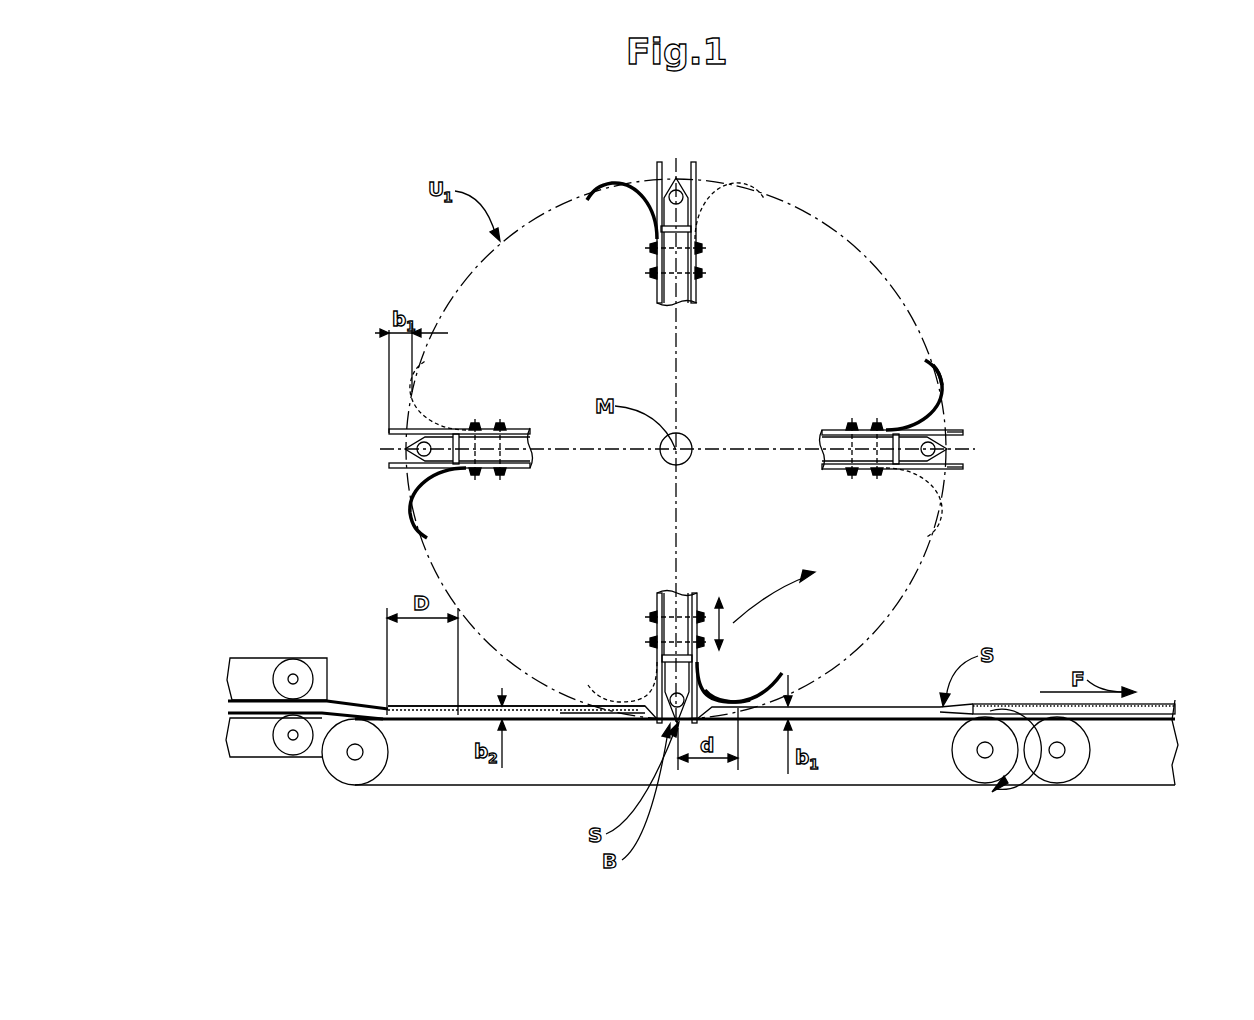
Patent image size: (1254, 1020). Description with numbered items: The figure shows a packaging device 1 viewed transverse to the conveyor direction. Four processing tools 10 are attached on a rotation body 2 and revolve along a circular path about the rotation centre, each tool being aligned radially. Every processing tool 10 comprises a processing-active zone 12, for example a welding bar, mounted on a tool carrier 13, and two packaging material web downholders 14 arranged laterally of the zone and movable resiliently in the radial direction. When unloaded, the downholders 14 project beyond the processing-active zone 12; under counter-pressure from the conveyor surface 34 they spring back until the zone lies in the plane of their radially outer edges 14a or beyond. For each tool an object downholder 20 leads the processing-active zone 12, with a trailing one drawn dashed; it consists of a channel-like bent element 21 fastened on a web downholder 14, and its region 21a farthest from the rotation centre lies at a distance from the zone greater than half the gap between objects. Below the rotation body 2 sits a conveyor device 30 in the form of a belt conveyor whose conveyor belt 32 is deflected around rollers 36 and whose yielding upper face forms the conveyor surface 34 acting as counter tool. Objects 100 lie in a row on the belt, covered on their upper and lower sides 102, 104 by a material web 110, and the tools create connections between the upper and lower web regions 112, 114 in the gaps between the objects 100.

The packaging device 1 is at (362, 212).
The rotation body 2 is at (878, 292).
The processing tool 10 is at (846, 562).
The processing-active zone 12 is at (955, 447).
The tool carrier 13 is at (835, 447).
The packaging material web downholder 14 is at (946, 430).
The radially outer lying edge 14a is at (962, 433).
The object downholder 20 is at (935, 352).
The bent element 21 is at (944, 386).
The region of greatest distance from rotation centre 21a is at (745, 690).
The conveyor device 30 is at (704, 782).
The conveyor belt 32 is at (465, 786).
The conveyor surface 34 is at (920, 716).
The roller 36 is at (330, 757).
The object 100 is at (237, 705).
The upper side of object 102 is at (333, 707).
The lower side of object 104 is at (237, 716).
The material web 110 is at (420, 700).
The upper region of material web 112 is at (415, 700).
The lower region of material web 114 is at (423, 713).